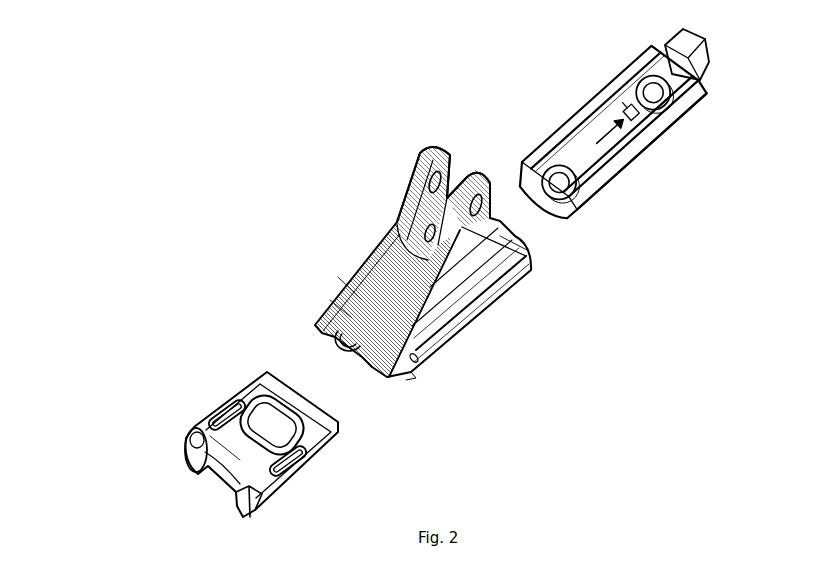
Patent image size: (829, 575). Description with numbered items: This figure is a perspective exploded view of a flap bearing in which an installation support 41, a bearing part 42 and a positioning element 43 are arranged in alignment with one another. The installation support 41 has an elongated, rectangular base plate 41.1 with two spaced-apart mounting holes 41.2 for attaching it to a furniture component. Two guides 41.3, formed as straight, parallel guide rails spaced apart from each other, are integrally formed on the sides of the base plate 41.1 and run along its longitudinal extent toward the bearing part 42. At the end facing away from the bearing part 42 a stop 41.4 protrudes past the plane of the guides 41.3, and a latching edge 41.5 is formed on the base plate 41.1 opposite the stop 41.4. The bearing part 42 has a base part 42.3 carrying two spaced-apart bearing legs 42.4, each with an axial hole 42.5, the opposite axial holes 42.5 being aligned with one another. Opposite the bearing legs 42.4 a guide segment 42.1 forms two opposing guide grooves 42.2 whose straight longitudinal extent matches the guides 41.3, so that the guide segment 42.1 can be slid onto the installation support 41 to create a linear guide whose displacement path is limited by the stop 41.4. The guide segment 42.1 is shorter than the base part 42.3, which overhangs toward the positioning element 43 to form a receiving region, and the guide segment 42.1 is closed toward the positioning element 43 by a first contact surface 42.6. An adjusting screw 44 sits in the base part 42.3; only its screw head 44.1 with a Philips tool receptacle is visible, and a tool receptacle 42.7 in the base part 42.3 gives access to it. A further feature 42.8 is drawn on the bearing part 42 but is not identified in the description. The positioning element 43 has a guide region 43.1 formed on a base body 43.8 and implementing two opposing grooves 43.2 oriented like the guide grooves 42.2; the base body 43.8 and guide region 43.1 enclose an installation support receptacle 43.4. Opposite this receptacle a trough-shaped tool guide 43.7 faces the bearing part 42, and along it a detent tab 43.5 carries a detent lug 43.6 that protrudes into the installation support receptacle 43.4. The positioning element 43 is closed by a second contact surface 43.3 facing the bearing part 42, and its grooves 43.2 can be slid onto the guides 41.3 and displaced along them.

The installation support 41 is at (763, 235).
The base plate 41.1 is at (677, 123).
The mounting holes 41.2 is at (700, 105).
The guides 41.3 is at (600, 100).
The stop 41.4 is at (705, 53).
The latching edge 41.5 is at (583, 210).
The bearing part 42 is at (640, 415).
The guide segment 42.1 is at (480, 313).
The guide grooves 42.2 is at (428, 357).
The base part 42.3 is at (500, 297).
The bearing legs 42.4 is at (392, 212).
The axial hole 42.5 is at (533, 245).
The first contact surface 42.6 is at (417, 370).
The tool receptacle 42.7 is at (330, 302).
The bearing lug 42.8 is at (405, 183).
The positioning element 43 is at (138, 353).
The guide region 43.1 is at (186, 460).
The grooves 43.2 is at (237, 507).
The second contact surface 43.3 is at (264, 369).
The installation support receptacle 43.4 is at (217, 483).
The detent tab 43.5 is at (307, 437).
The detent lug 43.6 is at (320, 450).
The tool guide 43.7 is at (185, 440).
The base body 43.8 is at (186, 450).
The adjusting screw 44 is at (335, 291).
The screw head 44.1 is at (338, 277).